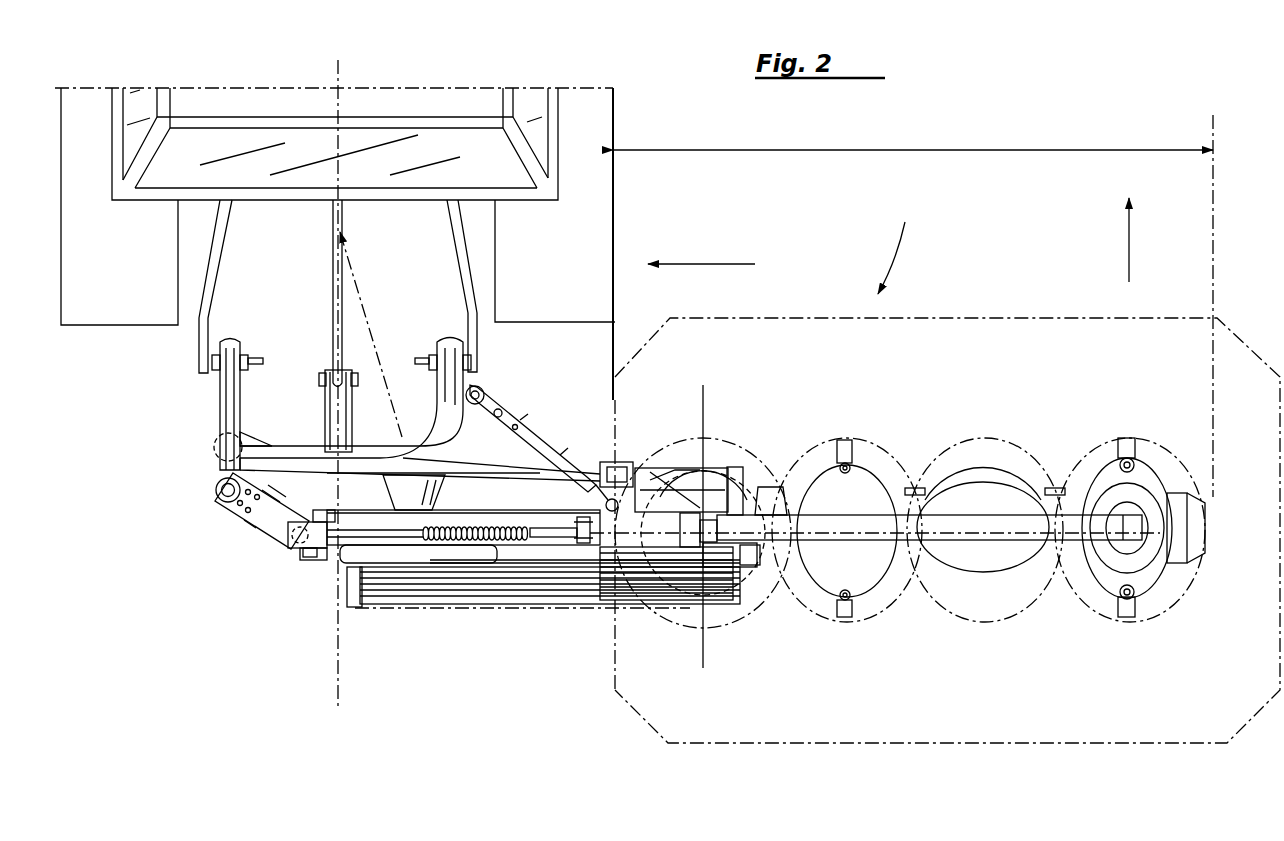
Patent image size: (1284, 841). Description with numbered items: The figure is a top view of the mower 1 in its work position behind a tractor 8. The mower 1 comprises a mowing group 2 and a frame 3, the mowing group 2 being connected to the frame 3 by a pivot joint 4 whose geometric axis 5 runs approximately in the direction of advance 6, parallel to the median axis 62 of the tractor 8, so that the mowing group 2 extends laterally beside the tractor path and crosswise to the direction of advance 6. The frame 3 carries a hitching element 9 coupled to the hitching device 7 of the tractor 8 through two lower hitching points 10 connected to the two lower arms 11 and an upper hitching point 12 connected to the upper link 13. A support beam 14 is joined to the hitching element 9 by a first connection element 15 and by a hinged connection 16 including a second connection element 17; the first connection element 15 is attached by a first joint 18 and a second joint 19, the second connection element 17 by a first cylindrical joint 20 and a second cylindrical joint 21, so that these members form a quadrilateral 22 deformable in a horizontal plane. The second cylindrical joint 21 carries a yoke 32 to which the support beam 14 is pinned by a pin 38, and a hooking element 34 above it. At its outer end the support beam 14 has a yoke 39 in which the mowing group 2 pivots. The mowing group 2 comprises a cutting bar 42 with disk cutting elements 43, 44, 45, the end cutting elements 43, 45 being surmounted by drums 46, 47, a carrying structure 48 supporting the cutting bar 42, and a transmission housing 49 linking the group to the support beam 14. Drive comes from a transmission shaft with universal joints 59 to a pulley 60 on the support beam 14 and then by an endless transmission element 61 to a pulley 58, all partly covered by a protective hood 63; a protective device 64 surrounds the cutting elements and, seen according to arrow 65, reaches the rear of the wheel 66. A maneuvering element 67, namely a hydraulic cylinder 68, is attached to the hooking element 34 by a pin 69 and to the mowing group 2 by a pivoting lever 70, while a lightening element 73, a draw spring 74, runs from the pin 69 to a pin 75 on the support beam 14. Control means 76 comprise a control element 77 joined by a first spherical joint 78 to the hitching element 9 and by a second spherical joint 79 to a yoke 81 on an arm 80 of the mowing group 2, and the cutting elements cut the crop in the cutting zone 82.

The mower 1 is at (897, 244).
The mowing group 2 is at (912, 486).
The frame 3 is at (262, 549).
The pivot joint 4 is at (690, 487).
The geometric axis 5 is at (702, 648).
The direction of advance 6 is at (1129, 258).
The hitching device 7 is at (290, 276).
The tractor 8 is at (613, 112).
The hitching element 9 is at (447, 407).
The lower hitching points 10 is at (200, 363).
The lower arms 11 is at (210, 296).
The upper hitching point 12 is at (350, 411).
The upper link 13 is at (333, 318).
The support beam 14 is at (465, 509).
The first connection element 15 is at (533, 433).
The hinged connection 16 is at (232, 515).
The second connection element 17 is at (262, 522).
The first joint 18 is at (483, 391).
The second joint 19 is at (616, 508).
The first cylindrical joint 20 is at (216, 494).
The second cylindrical joint 21 is at (293, 545).
The deformable quadrilateral 22 is at (372, 498).
The yoke 32 is at (302, 513).
The hooking element 34 is at (313, 560).
The pin 38 is at (328, 508).
The yoke 39 is at (668, 470).
The cutting bar 42 is at (915, 541).
The cutting element 43 is at (762, 560).
The cutting element 44 is at (827, 475).
The cutting element 45 is at (1147, 487).
The drum 46 is at (735, 467).
The drum 47 is at (1147, 552).
The carrying structure 48 is at (983, 542).
The transmission housing 49 is at (690, 538).
The pulley 58 is at (723, 603).
The transmission shaft with universal joints 59 is at (373, 340).
The pulley 60 is at (393, 604).
The endless transmission element 61 is at (525, 596).
The median axis 62 is at (335, 687).
The protective hood 63 is at (457, 604).
The protective device 64 is at (1120, 745).
The arrow 65 is at (722, 263).
The wheel 66 is at (588, 322).
The maneuvering element 67 is at (352, 572).
The hydraulic cylinder 68 is at (568, 553).
The pin 69 is at (312, 557).
The pivoting lever 70 is at (757, 578).
The lightening element 73 is at (483, 524).
The draw spring 74 is at (522, 526).
The pin 75 is at (580, 516).
The control means 76 is at (258, 436).
The control element 77 is at (470, 458).
The first spherical joint 78 is at (223, 447).
The second spherical joint 79 is at (598, 463).
The arm 80 is at (707, 466).
The yoke 81 is at (618, 460).
The cutting zone 82 is at (1022, 147).